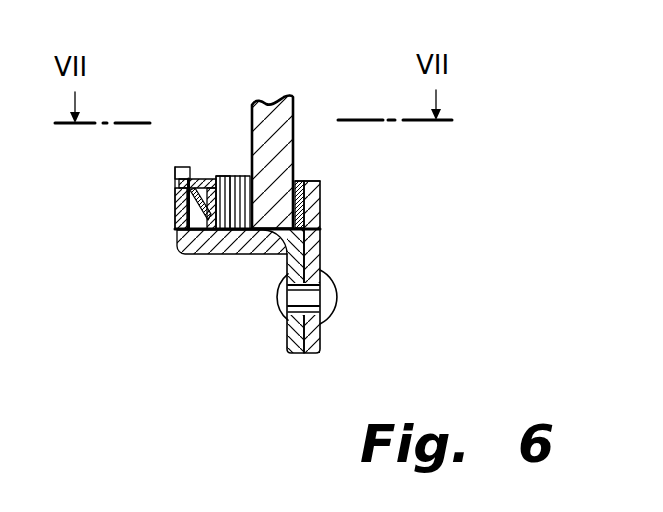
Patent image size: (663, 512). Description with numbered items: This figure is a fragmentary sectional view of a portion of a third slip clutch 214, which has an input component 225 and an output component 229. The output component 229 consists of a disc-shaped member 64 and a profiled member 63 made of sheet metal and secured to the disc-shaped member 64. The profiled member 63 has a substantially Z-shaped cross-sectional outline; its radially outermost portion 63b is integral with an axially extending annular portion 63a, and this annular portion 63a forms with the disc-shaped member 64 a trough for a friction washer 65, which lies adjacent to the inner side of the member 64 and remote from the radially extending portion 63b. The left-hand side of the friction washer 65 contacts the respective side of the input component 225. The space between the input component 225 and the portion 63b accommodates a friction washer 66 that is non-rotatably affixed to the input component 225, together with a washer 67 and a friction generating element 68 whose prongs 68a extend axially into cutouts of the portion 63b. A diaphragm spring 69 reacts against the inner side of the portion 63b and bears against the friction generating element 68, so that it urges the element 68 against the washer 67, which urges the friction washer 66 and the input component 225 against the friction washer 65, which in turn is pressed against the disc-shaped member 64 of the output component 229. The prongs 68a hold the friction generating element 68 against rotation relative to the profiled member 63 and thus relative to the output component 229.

The third slip clutch 214 is at (314, 143).
The input component 225 is at (278, 148).
The friction washer 65 is at (308, 193).
The disc-shaped member 64 is at (312, 230).
The profiled member 63 is at (297, 332).
The axially extending annular portion 63a is at (227, 254).
The radially outermost portion 63b is at (178, 212).
The output component 229 is at (322, 335).
The friction washer 66 is at (242, 175).
The washer 67 is at (222, 176).
The friction generating element 68 is at (226, 178).
The prongs 68a is at (177, 181).
The diaphragm spring 69 is at (183, 236).